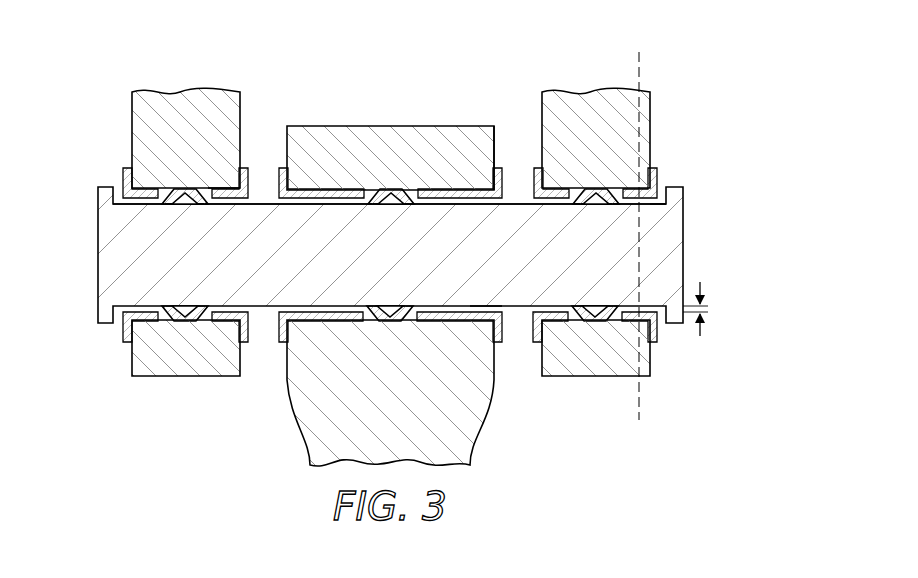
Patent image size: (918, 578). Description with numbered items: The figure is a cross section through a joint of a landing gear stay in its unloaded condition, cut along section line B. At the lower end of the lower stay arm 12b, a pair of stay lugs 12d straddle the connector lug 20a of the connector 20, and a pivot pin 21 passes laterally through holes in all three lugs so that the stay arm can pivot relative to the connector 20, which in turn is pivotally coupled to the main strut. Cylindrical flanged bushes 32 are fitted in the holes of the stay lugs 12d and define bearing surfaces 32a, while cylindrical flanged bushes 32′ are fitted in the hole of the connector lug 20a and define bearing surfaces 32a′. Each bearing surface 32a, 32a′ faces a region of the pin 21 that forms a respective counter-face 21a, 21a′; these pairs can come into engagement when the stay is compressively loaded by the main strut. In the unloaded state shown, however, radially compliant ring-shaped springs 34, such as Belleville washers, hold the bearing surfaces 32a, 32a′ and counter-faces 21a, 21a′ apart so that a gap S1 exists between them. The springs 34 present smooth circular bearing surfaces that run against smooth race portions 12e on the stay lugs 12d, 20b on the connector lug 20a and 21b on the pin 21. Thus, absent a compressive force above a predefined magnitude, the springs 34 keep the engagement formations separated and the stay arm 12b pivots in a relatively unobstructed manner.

The connector 20 is at (305, 434).
The connector lug 20a is at (328, 150).
The race portion 20b is at (420, 186).
The lower stay arm 12b is at (394, 217).
The stay lugs 12d is at (150, 118).
The race portion 12e is at (208, 188).
The pivot pin 21 is at (106, 256).
The counter-face 21a is at (657, 212).
The counter-face 21a′ is at (500, 297).
The race portion 21b is at (220, 205).
The cylindrical flanged bushes 32 is at (657, 172).
The cylindrical flanged bushes 32′ is at (501, 340).
The bearing surface 32a is at (652, 206).
The bearing surface 32a′ is at (483, 310).
The radially compliant ring-shaped springs 34 is at (186, 319).
The gap S1 is at (709, 309).
The section line B- B is at (638, 238).